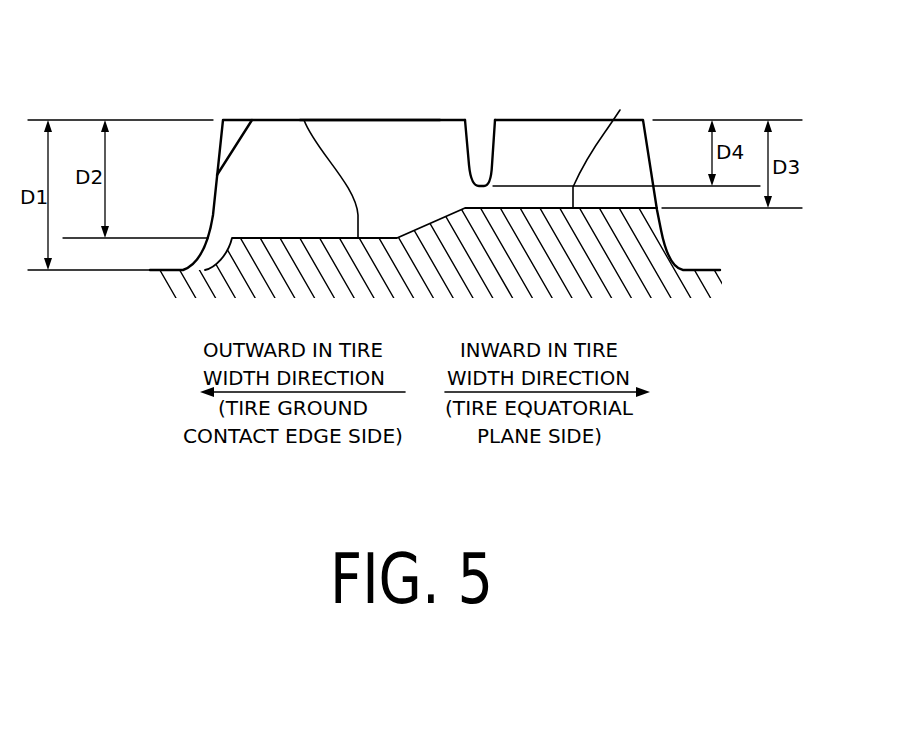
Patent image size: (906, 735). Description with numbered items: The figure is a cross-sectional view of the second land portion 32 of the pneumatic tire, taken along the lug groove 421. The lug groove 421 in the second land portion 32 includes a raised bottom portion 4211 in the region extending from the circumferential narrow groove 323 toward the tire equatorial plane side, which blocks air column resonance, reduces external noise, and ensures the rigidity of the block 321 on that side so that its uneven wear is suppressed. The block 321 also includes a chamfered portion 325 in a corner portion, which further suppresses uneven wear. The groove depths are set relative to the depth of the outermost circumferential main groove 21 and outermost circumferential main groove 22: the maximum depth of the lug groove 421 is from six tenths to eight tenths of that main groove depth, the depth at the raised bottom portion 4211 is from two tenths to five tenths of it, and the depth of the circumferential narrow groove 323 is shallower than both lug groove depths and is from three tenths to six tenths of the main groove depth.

The outermost circumferential main groove 21 is at (685, 145).
The outermost circumferential main groove 22 is at (145, 143).
The second land portion 32 is at (540, 65).
The block 321 is at (366, 120).
The circumferential narrow groove 323 is at (480, 133).
The chamfered portion 325 is at (237, 130).
The lug groove 421 is at (304, 120).
The raised bottom portion 4211 is at (620, 110).